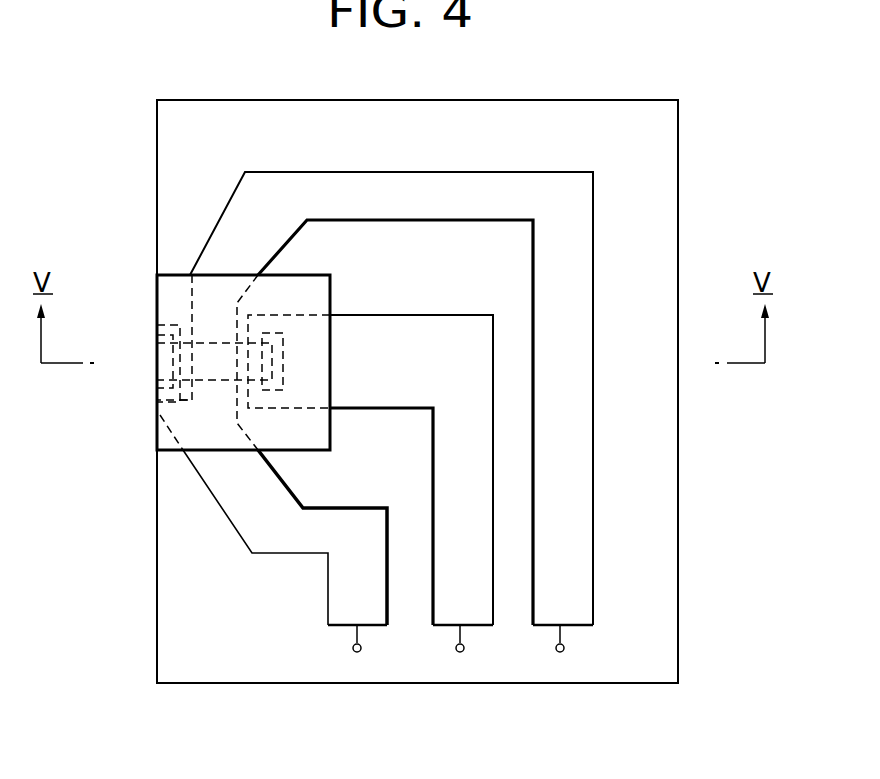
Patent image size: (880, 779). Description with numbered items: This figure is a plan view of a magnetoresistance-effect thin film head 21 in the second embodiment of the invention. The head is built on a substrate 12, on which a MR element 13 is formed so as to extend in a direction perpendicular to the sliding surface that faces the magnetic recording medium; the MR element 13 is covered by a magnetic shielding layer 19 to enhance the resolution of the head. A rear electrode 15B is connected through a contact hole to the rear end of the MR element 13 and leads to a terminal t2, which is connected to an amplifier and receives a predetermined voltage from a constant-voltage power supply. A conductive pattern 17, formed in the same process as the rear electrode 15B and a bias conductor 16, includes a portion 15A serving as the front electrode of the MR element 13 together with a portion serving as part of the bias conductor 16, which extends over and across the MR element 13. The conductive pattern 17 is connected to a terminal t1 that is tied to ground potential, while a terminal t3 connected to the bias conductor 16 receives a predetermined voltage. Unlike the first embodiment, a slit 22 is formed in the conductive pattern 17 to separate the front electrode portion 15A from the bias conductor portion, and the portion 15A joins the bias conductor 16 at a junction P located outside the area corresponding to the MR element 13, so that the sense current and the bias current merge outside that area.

The thin film head 21 is at (80, 78).
The substrate 12 is at (666, 558).
The MR element 13 is at (212, 353).
The bias conductor 16 is at (422, 187).
The conductive pattern 17 is at (212, 402).
The magnetic shielding layer 19 is at (238, 275).
The front electrode portion 15A is at (160, 326).
The rear electrode 15B is at (398, 327).
The slit 22 is at (187, 400).
The junction P is at (183, 420).
The terminal t1 is at (357, 653).
The terminal t2 is at (460, 653).
The terminal t3 is at (560, 653).